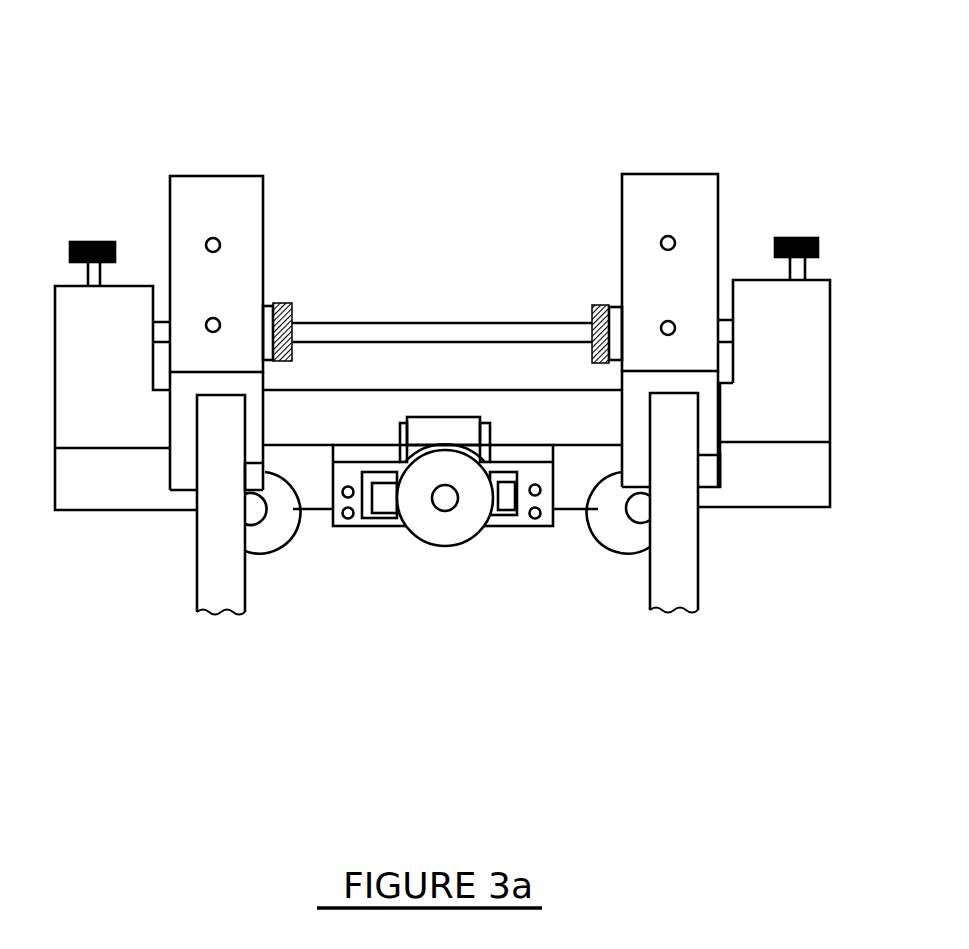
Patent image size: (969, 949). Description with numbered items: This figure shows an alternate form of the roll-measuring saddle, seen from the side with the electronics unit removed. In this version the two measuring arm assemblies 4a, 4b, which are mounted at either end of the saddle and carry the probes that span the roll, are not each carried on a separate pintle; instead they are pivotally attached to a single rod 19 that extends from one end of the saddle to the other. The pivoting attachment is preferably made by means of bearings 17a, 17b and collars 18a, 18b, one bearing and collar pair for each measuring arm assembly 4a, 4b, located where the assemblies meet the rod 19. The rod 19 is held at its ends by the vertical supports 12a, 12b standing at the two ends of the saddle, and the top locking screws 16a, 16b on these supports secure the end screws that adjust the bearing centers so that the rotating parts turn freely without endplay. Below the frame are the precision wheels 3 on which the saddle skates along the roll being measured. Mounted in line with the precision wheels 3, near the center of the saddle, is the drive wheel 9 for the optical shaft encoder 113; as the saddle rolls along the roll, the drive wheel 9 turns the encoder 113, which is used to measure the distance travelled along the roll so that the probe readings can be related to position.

The precision wheels 3 is at (618, 513).
The measuring arm assembly 4a is at (200, 215).
The measuring arm assembly 4b is at (650, 198).
The drive wheel 9 is at (443, 524).
The vertical support 12a is at (134, 312).
The vertical support 12b is at (767, 313).
The top locking screw 16a is at (92, 243).
The top locking screw 16b is at (795, 238).
The bearing 17a is at (268, 305).
The bearing 17b is at (618, 307).
The collar 18a is at (292, 315).
The collar 18b is at (592, 315).
The single rod 19 is at (443, 330).
The optical shaft encoder 113 is at (453, 425).